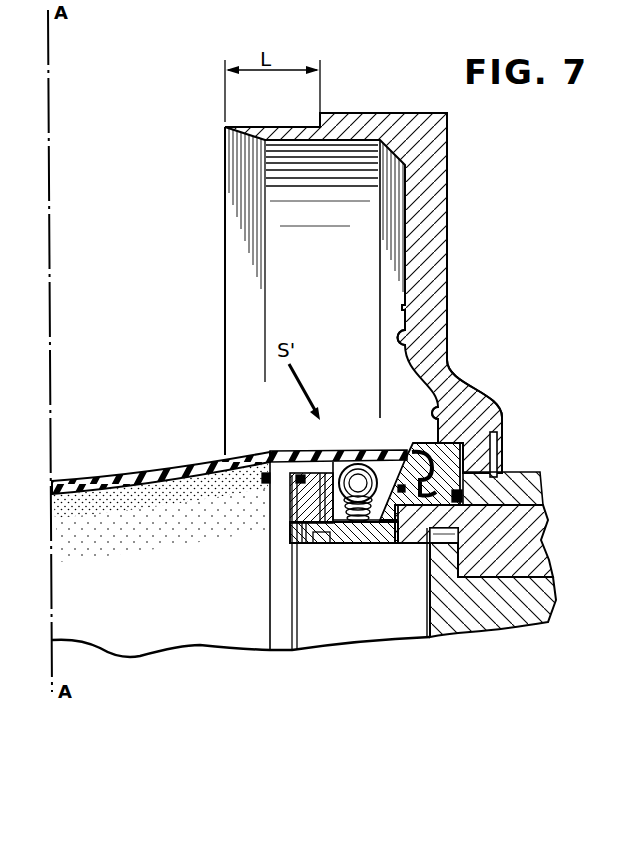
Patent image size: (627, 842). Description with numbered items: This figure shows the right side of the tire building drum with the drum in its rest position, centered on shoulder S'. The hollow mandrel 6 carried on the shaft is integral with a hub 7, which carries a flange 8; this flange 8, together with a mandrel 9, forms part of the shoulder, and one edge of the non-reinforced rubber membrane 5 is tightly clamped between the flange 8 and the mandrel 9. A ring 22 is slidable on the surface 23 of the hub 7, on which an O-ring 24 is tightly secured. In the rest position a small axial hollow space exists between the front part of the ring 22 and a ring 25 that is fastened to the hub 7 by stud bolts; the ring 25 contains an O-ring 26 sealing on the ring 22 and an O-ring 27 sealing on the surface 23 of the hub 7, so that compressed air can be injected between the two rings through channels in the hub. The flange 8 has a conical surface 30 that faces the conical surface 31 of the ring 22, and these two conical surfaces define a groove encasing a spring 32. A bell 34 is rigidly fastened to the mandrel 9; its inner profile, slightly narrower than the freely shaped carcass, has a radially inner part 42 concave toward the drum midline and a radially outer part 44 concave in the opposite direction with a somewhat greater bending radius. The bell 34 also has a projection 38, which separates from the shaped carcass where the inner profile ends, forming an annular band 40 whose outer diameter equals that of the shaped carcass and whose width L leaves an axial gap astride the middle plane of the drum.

The rubber membrane 5 is at (150, 478).
The hollow mandrel 6 is at (480, 597).
The hub 7 is at (525, 524).
The flange 8 is at (412, 455).
The mandrel 9 is at (480, 432).
The ring 22 is at (272, 450).
The surface of hub 23 is at (382, 517).
The O-ring 24 is at (337, 523).
The ring 25 is at (307, 500).
The O-ring 26 is at (303, 481).
The O-ring 27 is at (303, 547).
The conical surface 30 is at (400, 467).
The conical surface 31 is at (327, 453).
The spring 32 is at (353, 463).
The bell 34 is at (447, 382).
The projection 38 is at (447, 195).
The annular band 40 is at (283, 124).
The radially inner part of inner profile 42 is at (440, 410).
The radially outer part of inner profile 44 is at (405, 326).